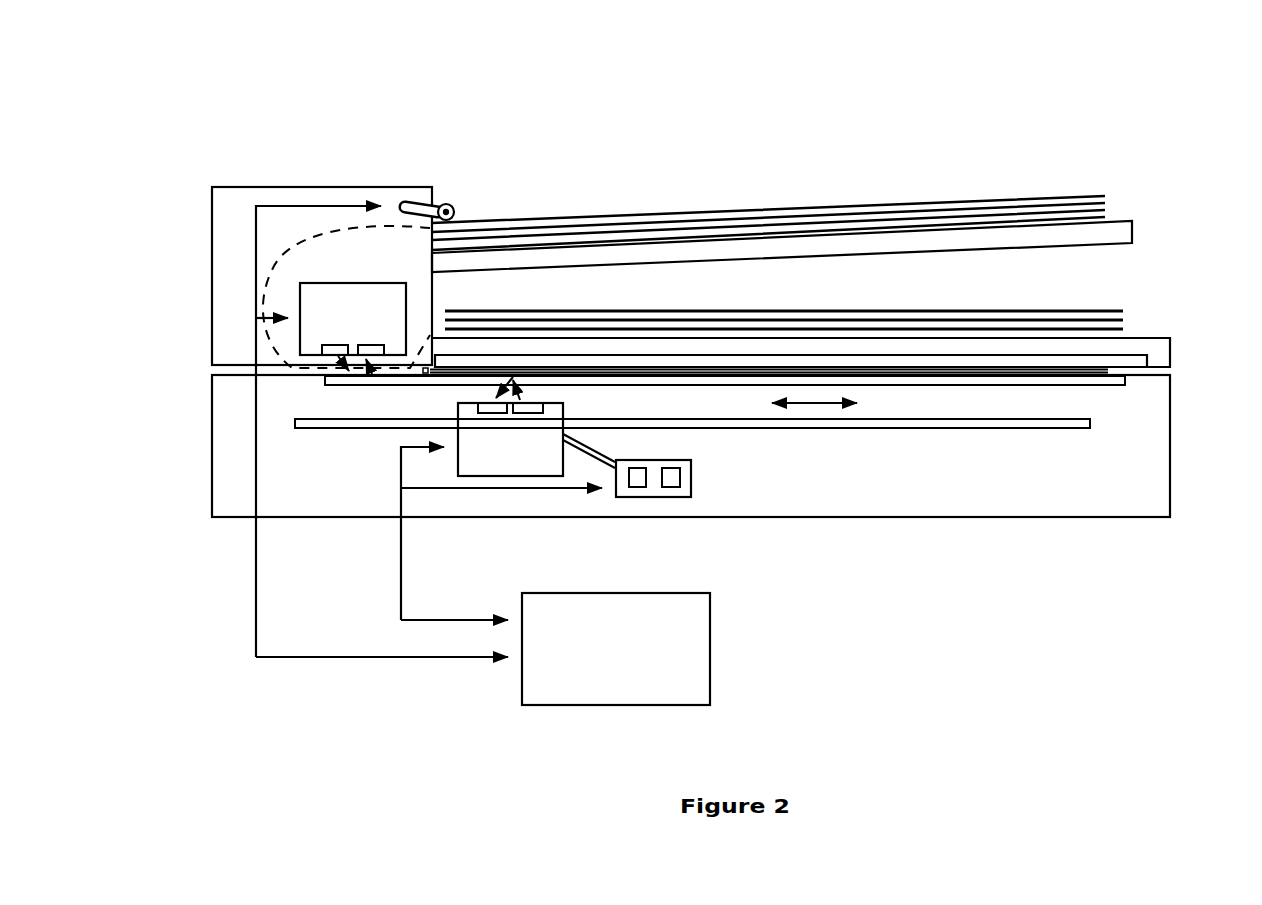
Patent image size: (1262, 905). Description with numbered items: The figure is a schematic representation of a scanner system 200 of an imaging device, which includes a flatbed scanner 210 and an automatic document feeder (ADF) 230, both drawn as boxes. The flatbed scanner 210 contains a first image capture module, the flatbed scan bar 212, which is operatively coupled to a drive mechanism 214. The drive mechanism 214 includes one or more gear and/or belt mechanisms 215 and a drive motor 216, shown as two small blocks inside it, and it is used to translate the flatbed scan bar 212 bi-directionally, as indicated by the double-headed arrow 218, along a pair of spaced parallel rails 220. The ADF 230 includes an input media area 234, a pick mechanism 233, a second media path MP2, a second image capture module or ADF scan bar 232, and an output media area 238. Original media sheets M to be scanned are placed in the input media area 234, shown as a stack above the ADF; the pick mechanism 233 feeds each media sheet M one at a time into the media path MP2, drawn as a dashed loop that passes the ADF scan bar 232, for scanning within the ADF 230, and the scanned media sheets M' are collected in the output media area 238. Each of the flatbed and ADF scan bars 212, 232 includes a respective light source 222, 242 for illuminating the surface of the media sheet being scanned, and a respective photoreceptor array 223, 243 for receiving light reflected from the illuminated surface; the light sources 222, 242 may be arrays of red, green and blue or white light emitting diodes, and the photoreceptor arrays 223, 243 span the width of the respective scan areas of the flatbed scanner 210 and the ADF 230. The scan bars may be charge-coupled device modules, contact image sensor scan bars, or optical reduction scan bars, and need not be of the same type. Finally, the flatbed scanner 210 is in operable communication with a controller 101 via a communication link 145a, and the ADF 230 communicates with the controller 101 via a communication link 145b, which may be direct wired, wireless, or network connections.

The scanner system 200 is at (1113, 123).
The automatic document feeder 230 is at (297, 187).
The pick mechanism 233 is at (434, 202).
The input media area 234 is at (782, 192).
The output media area 238 is at (819, 337).
The ADF scan bar 232 is at (353, 328).
The light source 242 is at (322, 348).
The photoreceptor array 243 is at (387, 345).
The flatbed scanner 210 is at (212, 403).
The flatbed scan bar 212 is at (517, 426).
The light source 222 is at (545, 404).
The photoreceptor array 223 is at (478, 408).
The drive mechanism 214 is at (692, 477).
The gear and/or belt mechanism 215 is at (638, 488).
The drive motor 216 is at (673, 488).
The arrow 218 is at (820, 403).
The spaced parallel rails 220 is at (925, 430).
The communication link 145a is at (402, 574).
The communication link 145b is at (256, 600).
The controller 101 is at (616, 649).
The media sheet M is at (768, 203).
The scanned media sheet M' is at (784, 297).
The second media path MP2 is at (283, 256).